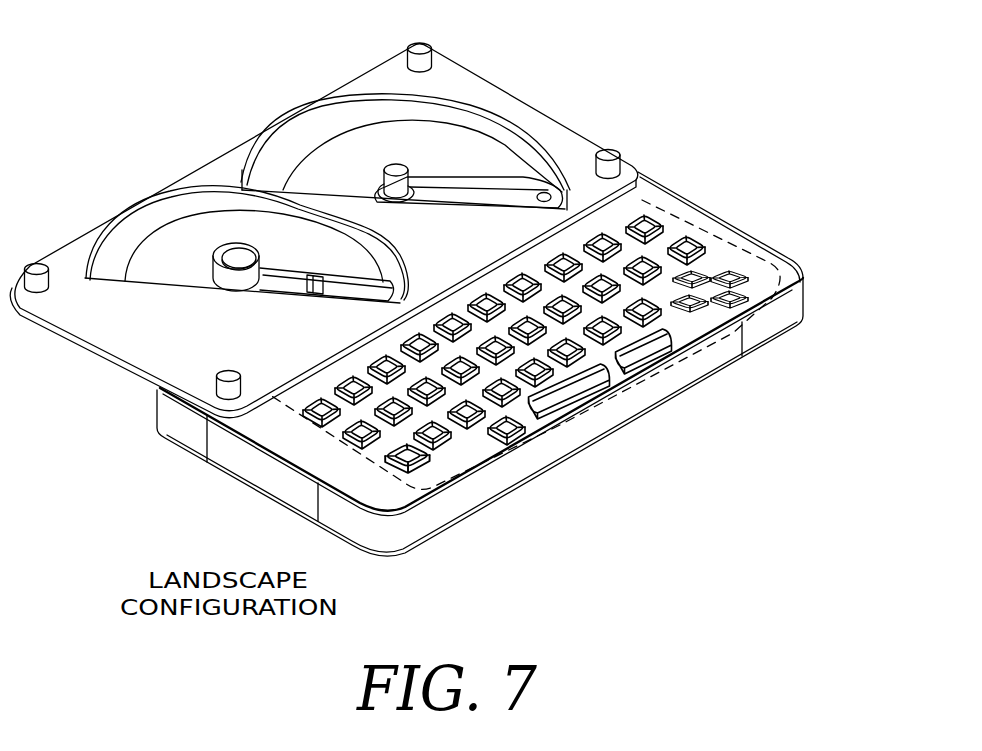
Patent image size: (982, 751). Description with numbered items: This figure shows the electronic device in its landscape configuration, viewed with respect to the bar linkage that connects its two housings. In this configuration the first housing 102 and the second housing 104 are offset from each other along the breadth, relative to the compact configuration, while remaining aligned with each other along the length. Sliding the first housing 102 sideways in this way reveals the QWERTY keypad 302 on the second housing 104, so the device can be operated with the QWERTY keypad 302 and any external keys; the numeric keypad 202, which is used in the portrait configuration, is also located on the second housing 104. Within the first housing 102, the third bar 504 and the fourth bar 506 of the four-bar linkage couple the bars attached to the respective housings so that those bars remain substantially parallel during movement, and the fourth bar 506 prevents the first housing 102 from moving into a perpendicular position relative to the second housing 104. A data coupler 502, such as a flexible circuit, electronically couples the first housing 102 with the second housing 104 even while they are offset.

The first housing 102 is at (372, 76).
The second housing 104 is at (806, 298).
The numeric keypad 202 is at (480, 458).
The QWERTY keypad 302 is at (715, 232).
The data coupler 502 is at (237, 285).
The third bar 504 is at (342, 260).
The fourth bar 506 is at (482, 178).